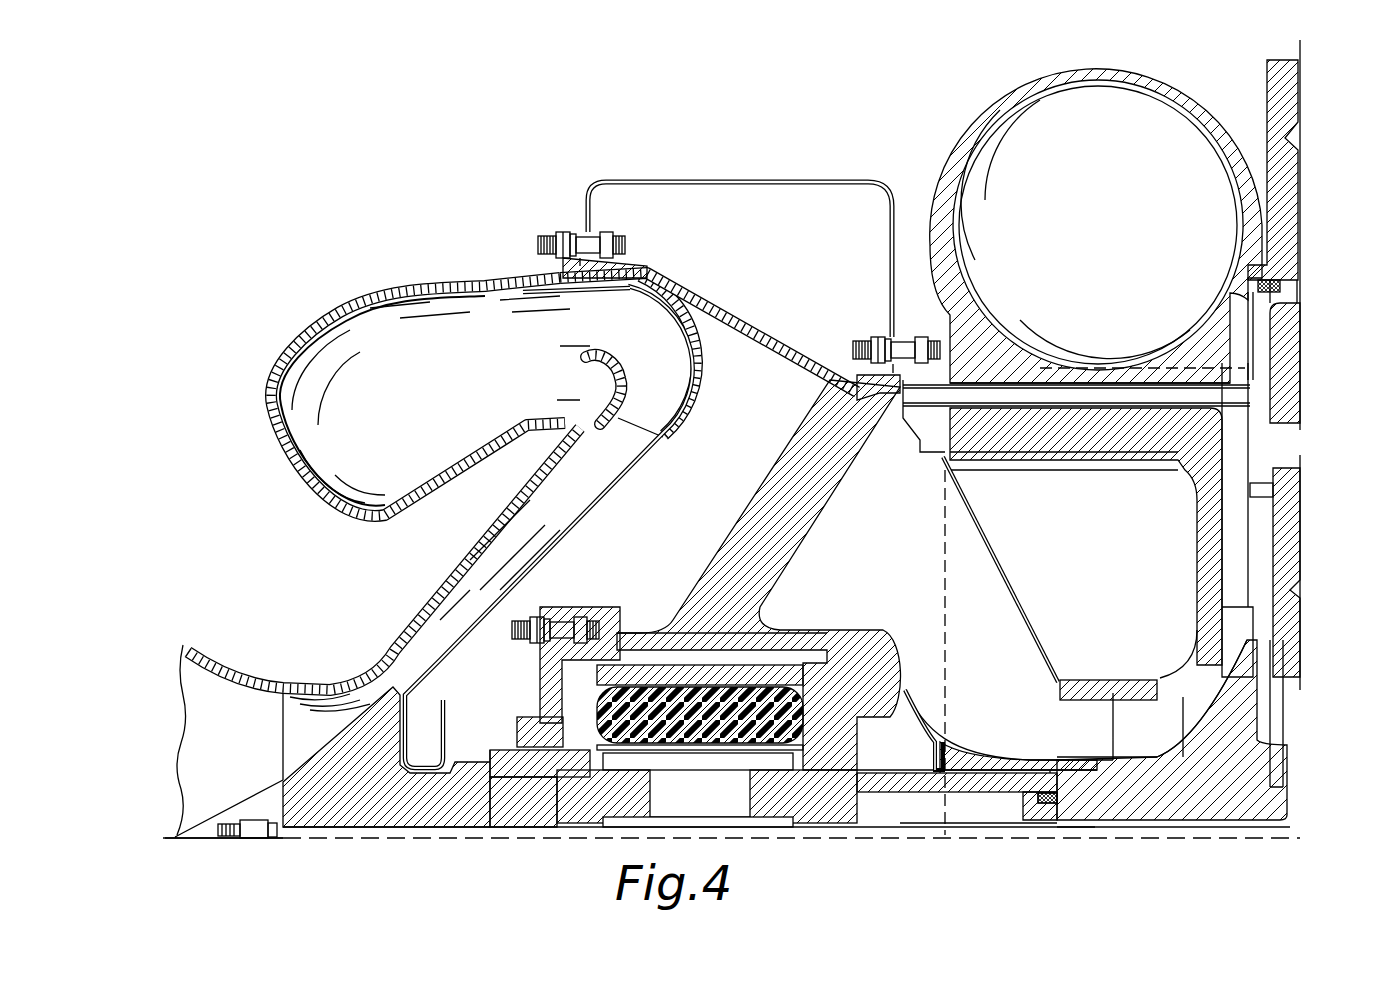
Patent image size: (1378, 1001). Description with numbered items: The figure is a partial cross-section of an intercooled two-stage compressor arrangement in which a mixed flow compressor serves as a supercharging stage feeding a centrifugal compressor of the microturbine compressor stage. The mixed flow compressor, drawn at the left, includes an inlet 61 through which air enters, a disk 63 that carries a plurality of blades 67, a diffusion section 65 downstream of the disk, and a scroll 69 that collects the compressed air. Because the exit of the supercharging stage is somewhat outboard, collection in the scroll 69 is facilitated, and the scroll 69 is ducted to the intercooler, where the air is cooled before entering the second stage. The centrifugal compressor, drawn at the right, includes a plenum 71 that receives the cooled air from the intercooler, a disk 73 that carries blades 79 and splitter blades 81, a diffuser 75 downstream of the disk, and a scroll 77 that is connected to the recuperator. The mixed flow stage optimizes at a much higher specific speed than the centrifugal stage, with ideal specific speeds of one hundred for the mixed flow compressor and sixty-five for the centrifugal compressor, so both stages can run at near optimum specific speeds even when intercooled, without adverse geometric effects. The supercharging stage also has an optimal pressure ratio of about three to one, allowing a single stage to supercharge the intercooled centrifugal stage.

The inlet 61 is at (241, 760).
The disk 63 is at (437, 770).
The diffusion section 65 is at (640, 487).
The blades 67 is at (340, 708).
The scroll 69 is at (412, 412).
The plenum 71 is at (896, 578).
The disk 73 is at (1195, 782).
The diffuser 75 is at (1180, 495).
The scroll 77 is at (1104, 273).
The blades 79 is at (1140, 680).
The splitter blades 81 is at (1220, 642).